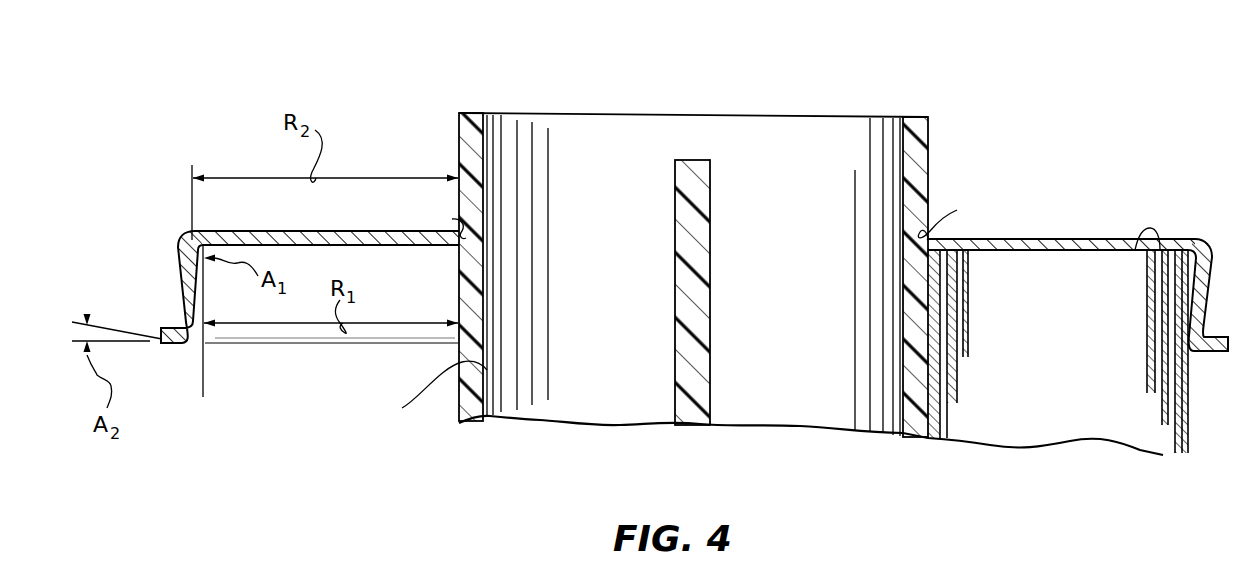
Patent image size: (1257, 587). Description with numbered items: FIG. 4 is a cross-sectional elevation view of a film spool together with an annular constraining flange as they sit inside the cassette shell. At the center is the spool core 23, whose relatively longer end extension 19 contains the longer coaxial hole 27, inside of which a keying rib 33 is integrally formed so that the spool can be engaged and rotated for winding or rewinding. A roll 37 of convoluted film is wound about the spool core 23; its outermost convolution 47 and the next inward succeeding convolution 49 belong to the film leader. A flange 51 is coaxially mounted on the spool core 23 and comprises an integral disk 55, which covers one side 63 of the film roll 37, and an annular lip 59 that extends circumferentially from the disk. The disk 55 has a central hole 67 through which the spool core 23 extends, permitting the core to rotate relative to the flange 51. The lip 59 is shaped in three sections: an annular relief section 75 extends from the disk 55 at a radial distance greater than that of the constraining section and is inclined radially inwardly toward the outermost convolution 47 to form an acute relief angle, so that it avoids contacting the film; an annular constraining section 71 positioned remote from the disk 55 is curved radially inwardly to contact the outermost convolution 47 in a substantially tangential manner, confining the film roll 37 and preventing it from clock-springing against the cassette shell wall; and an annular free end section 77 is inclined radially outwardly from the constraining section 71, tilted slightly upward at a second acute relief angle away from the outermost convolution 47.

The longer opposite end extension 19 is at (470, 113).
The spool core 23 is at (428, 392).
The longer coaxial hole 27 is at (903, 145).
The keying rib 33 is at (710, 215).
The film roll 37 is at (1043, 397).
The outermost convolution 47 is at (203, 397).
The next inward succeeding convolution 49 is at (1185, 427).
The flange 51 is at (181, 243).
The disk 55 is at (378, 231).
The annular lip 59 is at (189, 252).
The side of the film roll 63 is at (1138, 238).
The central hole 67 is at (705, 212).
The annular constraining section 71 is at (195, 318).
The annular relief section 75 is at (181, 290).
The annular free end section 77 is at (167, 344).